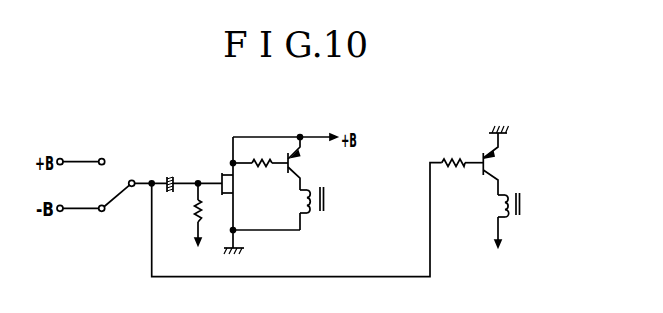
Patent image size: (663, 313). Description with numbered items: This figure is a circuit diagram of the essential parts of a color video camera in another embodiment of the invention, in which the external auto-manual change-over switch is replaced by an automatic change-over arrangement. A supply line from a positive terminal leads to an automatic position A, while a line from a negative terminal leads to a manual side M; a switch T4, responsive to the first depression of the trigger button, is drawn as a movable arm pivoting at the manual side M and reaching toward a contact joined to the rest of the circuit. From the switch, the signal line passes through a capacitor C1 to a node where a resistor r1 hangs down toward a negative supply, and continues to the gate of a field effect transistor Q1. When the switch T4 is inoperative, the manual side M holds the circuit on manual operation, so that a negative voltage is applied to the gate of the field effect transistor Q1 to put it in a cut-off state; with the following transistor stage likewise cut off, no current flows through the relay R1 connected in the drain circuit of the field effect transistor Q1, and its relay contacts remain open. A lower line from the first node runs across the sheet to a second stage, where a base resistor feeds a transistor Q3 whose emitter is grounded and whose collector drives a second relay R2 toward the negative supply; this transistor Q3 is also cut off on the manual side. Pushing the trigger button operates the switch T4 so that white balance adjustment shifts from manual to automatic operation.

The automatic position A is at (102, 151).
The manual side M is at (101, 218).
The switch T4 is at (119, 198).
The capacitor C1 is at (172, 173).
The resistor r1 is at (191, 226).
The field effect transistor Q1 is at (239, 183).
The relay R1 is at (281, 210).
The transistor Q3 is at (499, 160).
The relay coil R2 is at (514, 234).